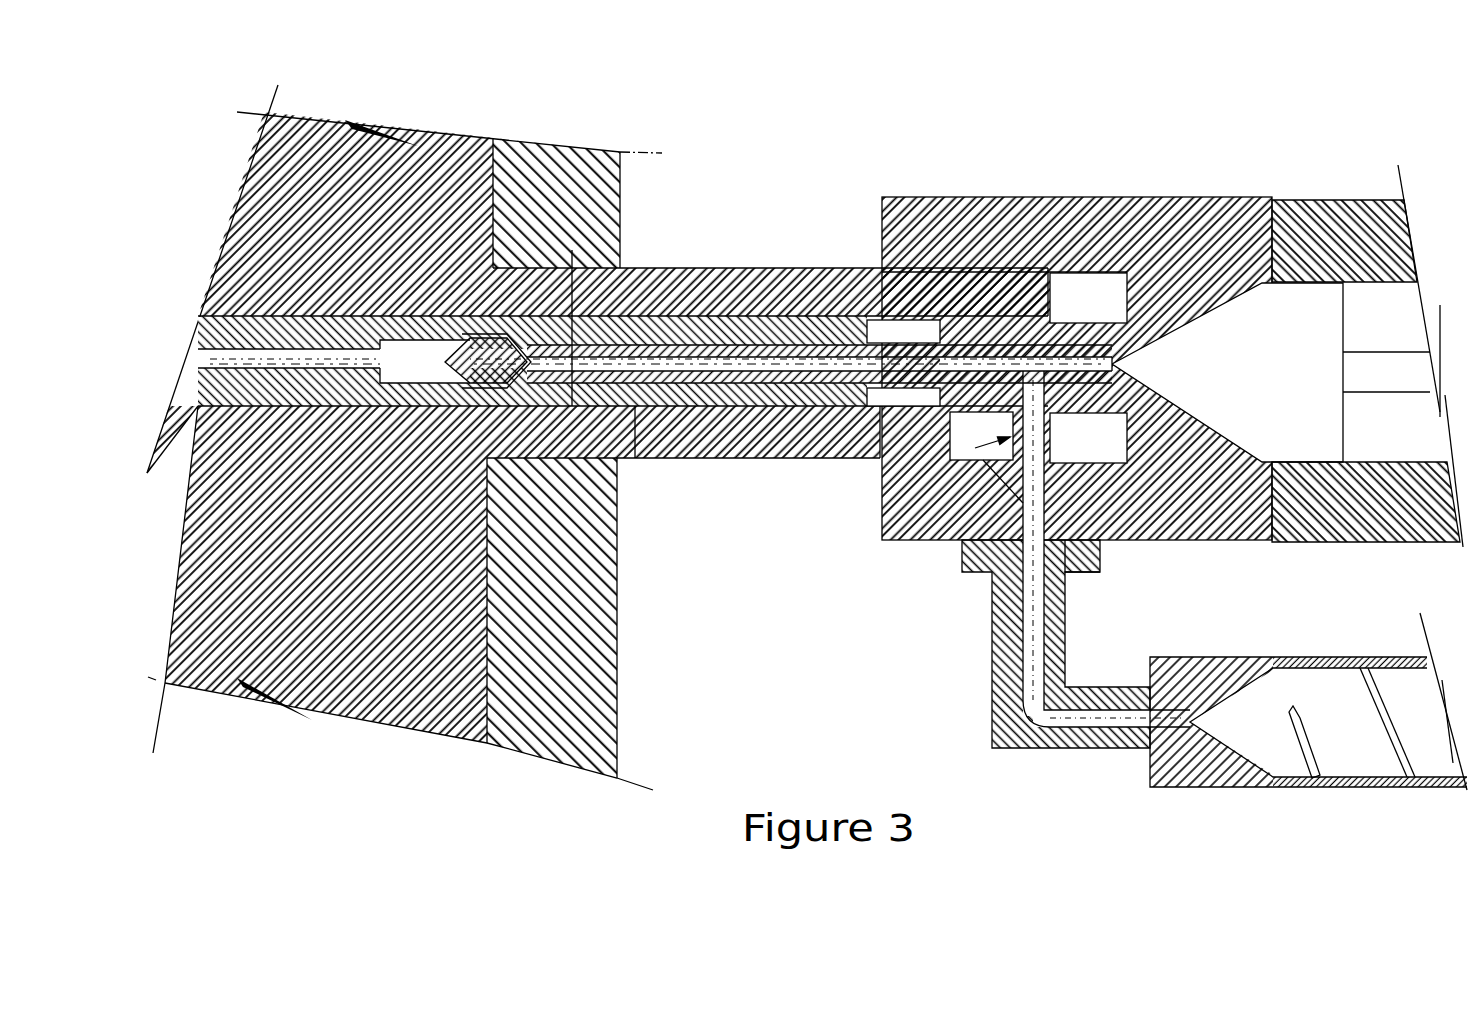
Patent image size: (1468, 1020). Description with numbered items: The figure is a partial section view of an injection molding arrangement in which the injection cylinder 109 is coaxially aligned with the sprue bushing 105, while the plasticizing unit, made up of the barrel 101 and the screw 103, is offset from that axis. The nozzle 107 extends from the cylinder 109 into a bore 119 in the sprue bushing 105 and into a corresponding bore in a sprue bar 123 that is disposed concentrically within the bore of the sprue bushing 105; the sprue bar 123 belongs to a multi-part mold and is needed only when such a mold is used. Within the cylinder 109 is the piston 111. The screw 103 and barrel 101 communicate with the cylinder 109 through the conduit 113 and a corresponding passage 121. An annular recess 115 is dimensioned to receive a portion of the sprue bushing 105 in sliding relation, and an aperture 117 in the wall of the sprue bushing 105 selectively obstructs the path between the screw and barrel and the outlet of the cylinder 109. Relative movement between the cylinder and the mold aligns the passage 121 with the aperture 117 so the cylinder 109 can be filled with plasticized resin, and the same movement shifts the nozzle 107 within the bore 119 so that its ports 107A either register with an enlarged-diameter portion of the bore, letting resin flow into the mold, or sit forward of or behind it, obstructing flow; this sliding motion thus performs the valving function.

The barrel 101 is at (1306, 757).
The screw 103 is at (1378, 701).
The sprue bushing 105 is at (770, 206).
The nozzle 107 is at (661, 235).
The ports 107A is at (527, 330).
The injection cylinder 109 is at (1077, 306).
The piston 111 is at (1287, 356).
The conduit 113 is at (1011, 651).
The annular recess 115 is at (938, 528).
The aperture 117 is at (1122, 567).
The bore 119 is at (750, 465).
The passage 121 is at (1140, 549).
The sprue bar 123 is at (569, 450).